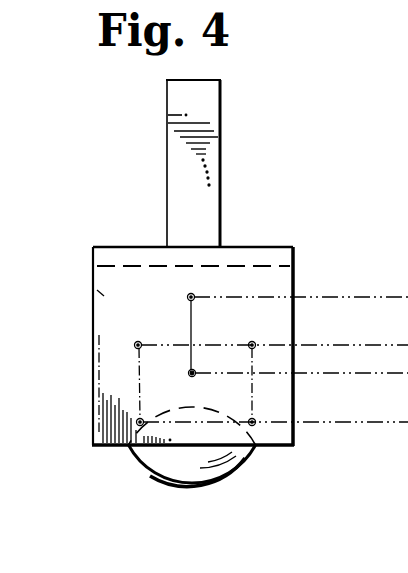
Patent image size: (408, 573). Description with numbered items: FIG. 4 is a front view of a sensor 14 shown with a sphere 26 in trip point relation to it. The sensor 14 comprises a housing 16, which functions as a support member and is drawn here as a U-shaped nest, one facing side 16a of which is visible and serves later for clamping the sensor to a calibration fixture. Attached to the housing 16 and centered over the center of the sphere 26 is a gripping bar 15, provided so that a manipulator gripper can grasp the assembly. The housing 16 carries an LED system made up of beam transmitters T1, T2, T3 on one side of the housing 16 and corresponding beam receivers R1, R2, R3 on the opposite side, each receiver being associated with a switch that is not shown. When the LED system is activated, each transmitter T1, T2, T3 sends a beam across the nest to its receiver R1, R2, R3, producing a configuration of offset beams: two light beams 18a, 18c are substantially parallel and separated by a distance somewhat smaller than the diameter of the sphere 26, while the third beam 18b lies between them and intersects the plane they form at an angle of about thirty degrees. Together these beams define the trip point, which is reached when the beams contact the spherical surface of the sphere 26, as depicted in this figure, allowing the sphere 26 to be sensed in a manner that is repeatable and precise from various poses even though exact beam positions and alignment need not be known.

The sensor 14 is at (243, 189).
The gripping bar 15 is at (172, 158).
The housing 16 is at (248, 245).
The facing side 16a is at (100, 292).
The light beam 18a is at (134, 378).
The third beam 18b is at (190, 313).
The light beam 18c is at (253, 397).
The sphere 26 is at (222, 481).
The beam transmitter T1 is at (138, 430).
The beam transmitter T2 is at (255, 430).
The beam transmitter T3 is at (187, 297).
The beam receiver R1 is at (136, 342).
The beam receiver R2 is at (253, 341).
The beam receiver R3 is at (295, 391).